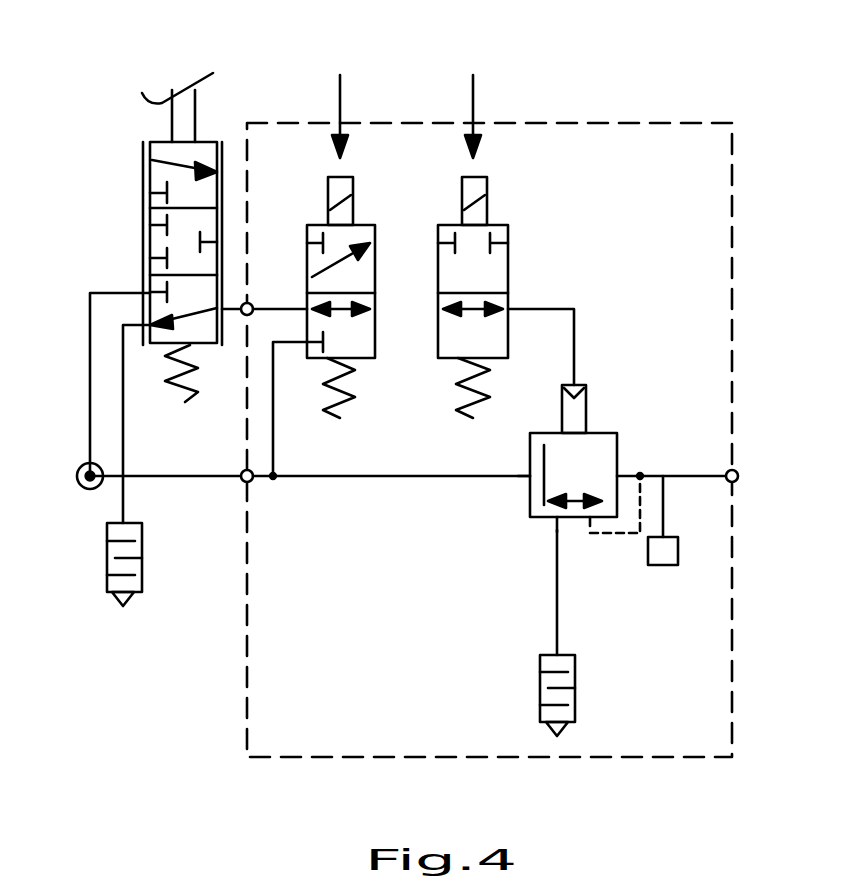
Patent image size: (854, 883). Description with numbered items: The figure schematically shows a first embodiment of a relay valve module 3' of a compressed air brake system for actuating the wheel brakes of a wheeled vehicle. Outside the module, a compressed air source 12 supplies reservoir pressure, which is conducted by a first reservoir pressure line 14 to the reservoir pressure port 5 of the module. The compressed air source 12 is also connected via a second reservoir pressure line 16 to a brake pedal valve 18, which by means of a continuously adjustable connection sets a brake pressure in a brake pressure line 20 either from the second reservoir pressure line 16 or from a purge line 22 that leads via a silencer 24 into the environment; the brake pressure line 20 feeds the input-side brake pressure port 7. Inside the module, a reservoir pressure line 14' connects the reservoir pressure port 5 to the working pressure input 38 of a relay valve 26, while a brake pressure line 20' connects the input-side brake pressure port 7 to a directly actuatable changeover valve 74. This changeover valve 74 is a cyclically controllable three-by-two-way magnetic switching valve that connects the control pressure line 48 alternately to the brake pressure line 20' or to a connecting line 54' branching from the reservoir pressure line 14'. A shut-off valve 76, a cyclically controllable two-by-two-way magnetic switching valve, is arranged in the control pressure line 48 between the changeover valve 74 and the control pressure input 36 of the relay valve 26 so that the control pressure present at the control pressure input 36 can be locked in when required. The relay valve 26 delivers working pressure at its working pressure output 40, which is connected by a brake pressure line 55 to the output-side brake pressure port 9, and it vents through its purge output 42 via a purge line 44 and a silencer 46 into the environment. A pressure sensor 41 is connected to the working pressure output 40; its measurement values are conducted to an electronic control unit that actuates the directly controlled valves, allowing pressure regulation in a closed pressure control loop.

The relay valve module 3' is at (419, 440).
The brake pedal valve 18 is at (125, 176).
The second reservoir pressure line 16 is at (112, 292).
The compressed air source 12 is at (88, 490).
The purge line 22 is at (125, 425).
The silencer 24 is at (142, 577).
The first reservoir pressure line 14 is at (168, 545).
The reservoir pressure port 5 is at (250, 482).
The reservoir pressure line 14' is at (391, 544).
The connecting line 54' is at (339, 409).
The brake pressure line 20 is at (256, 249).
The input-side brake pressure port 7 is at (245, 315).
The brake pressure line 20' is at (280, 267).
The changeover valve 74 is at (341, 227).
The shut-off valve 76 is at (473, 227).
The control pressure line 48 is at (541, 307).
The control pressure input 36 is at (558, 412).
The relay valve 26 is at (600, 430).
The working pressure input 38 is at (528, 480).
The purge output 42 is at (556, 519).
The brake pressure line 55 is at (689, 478).
The working pressure output 40 is at (637, 480).
The pressure sensor 41 is at (662, 567).
The output-side brake pressure port 9 is at (740, 474).
The purge line 44 is at (557, 632).
The silencer 46 is at (540, 693).